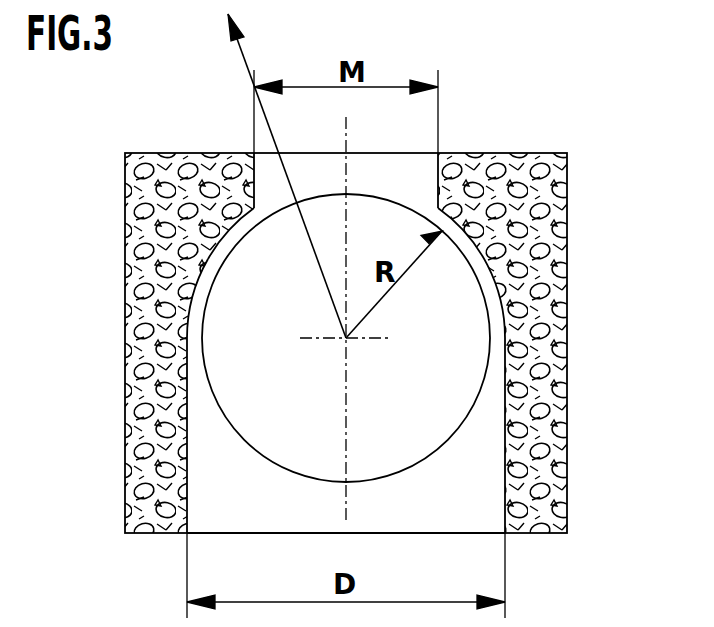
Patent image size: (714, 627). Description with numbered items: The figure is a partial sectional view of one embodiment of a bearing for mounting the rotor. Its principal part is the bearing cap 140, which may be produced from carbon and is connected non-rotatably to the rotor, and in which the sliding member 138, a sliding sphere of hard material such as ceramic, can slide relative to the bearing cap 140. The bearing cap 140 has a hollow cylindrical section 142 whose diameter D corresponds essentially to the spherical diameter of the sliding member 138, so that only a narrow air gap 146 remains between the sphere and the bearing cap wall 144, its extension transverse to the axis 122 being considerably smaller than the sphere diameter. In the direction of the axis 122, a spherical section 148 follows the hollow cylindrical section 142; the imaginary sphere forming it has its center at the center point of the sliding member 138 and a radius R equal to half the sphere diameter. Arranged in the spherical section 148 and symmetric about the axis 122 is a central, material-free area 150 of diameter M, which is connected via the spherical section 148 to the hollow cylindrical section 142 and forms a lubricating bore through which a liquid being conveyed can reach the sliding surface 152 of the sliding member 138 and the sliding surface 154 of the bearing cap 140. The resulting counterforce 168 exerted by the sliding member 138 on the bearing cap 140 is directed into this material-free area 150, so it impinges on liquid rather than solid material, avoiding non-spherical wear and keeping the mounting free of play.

The axis 122 is at (346, 128).
The sliding member 138 is at (443, 415).
The bearing cap 140 is at (547, 257).
The hollow cylindrical section 142 is at (208, 520).
The bearing cap wall 144 is at (150, 360).
The air gap 146 is at (211, 297).
The spherical section 148 is at (497, 288).
The central, material-free area 150 is at (266, 177).
The sliding surface of the sliding member 152 is at (240, 213).
The sliding surface of the bearing cap 154 is at (456, 224).
The resulting counterforce 168 is at (254, 73).